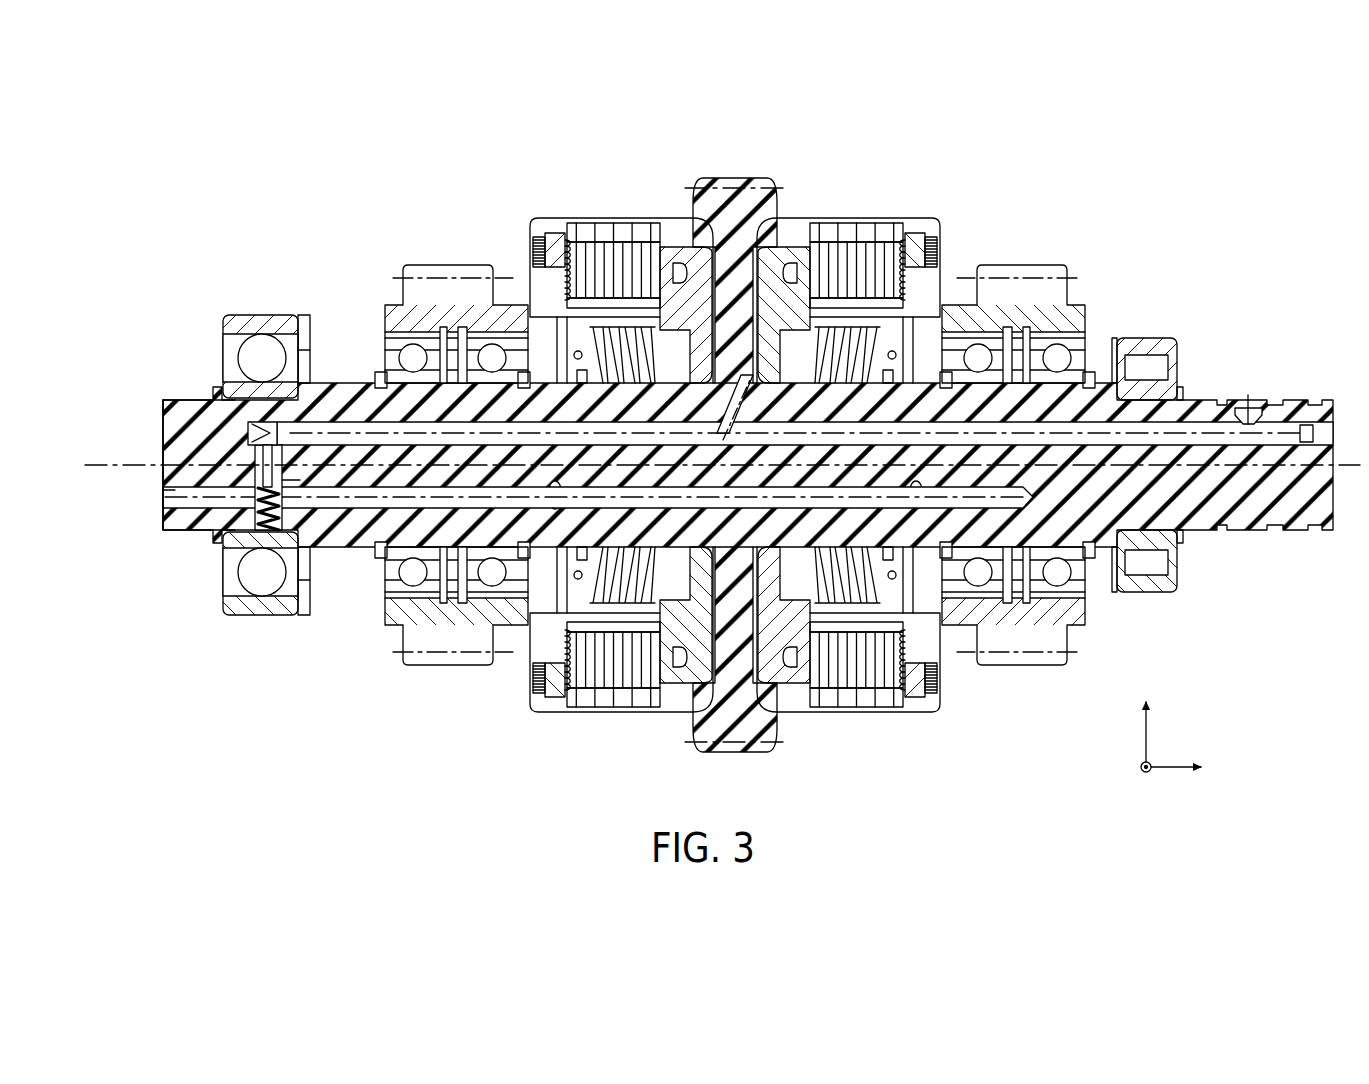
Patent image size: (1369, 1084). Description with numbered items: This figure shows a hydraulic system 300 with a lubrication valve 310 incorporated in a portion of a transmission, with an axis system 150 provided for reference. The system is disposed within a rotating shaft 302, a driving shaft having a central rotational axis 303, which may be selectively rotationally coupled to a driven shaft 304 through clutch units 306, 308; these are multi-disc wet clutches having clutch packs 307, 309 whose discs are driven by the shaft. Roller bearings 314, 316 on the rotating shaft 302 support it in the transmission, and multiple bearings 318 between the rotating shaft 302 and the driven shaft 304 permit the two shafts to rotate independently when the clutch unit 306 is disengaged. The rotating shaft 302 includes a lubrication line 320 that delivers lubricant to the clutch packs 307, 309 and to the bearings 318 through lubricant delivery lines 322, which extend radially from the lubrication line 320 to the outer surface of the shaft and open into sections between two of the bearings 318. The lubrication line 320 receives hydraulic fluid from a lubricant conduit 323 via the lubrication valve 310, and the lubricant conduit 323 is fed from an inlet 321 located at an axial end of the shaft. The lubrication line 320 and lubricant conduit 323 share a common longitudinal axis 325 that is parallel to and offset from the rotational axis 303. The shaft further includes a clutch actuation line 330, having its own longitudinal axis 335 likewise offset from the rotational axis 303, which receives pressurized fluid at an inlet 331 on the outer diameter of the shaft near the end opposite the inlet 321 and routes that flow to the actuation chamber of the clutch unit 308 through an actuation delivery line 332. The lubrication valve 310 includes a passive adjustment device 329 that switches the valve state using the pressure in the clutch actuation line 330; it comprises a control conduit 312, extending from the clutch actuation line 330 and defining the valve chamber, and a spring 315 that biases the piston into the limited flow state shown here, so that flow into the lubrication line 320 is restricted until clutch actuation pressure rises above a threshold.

The hydraulic system 300 is at (182, 212).
The rotating shaft 302 is at (163, 415).
The rotational axis 303 is at (160, 455).
The driven shaft 304 is at (434, 461).
The clutch unit 306 is at (603, 429).
The clutch pack 307 is at (615, 240).
The clutch unit 308 is at (900, 188).
The clutch pack 309 is at (835, 247).
The lubrication valve 310 is at (247, 472).
The control conduit 312 is at (285, 480).
The roller bearing 314 is at (262, 312).
The spring 315 is at (267, 530).
The roller bearing 316 is at (1160, 340).
The bearings 318 is at (385, 360).
The lubrication line 320 is at (345, 500).
The inlet 321 is at (160, 502).
The lubricant delivery lines 322 is at (450, 538).
The lubricant conduit 323 is at (161, 496).
The common longitudinal axis 325 is at (985, 495).
The passive adjustment device 329 is at (232, 497).
The clutch actuation line 330 is at (1196, 425).
The inlet 331 is at (1260, 399).
The actuation delivery line 332 is at (726, 418).
The longitudinal axis 335 is at (1085, 432).
The axis system 150 is at (1210, 710).